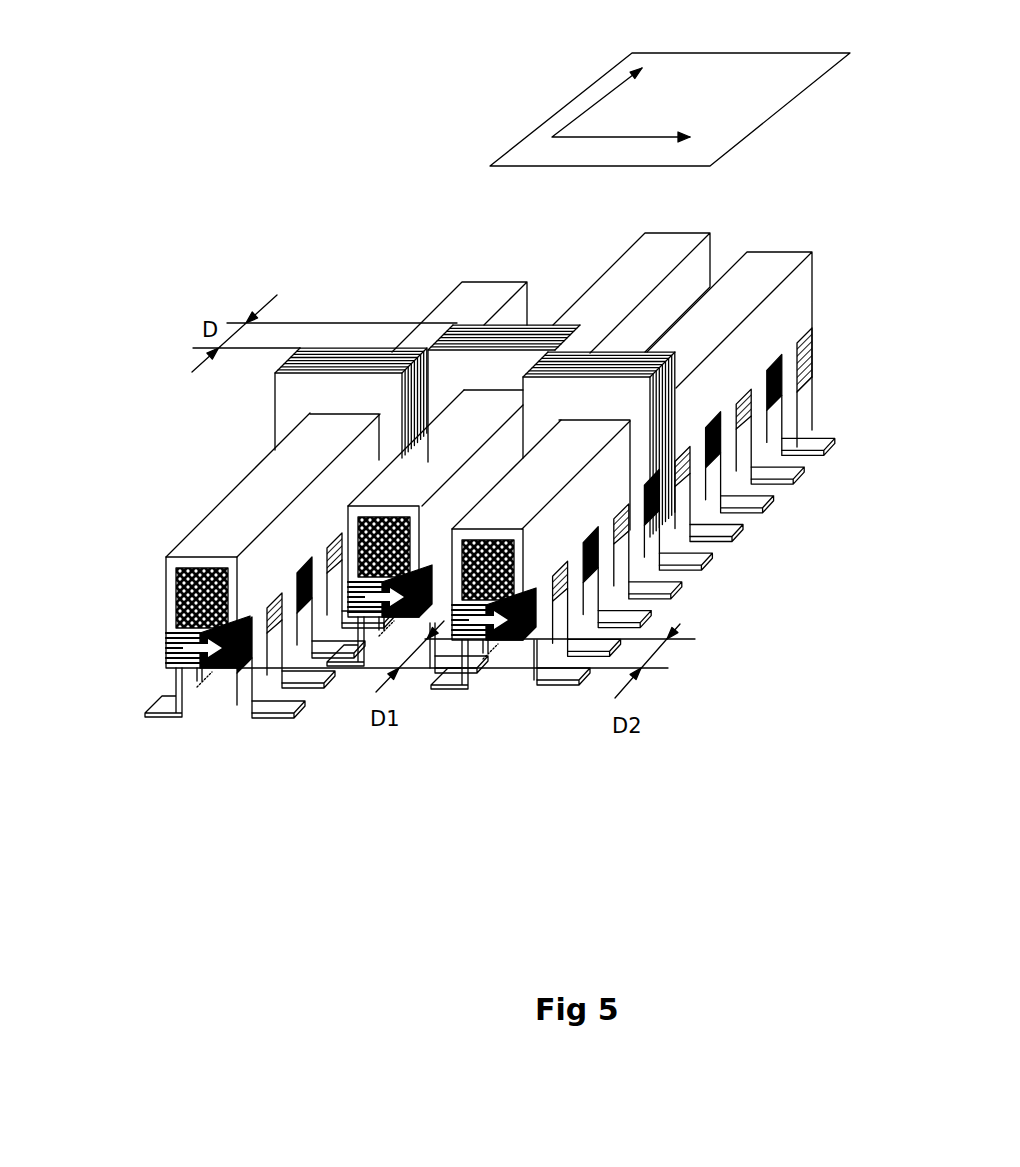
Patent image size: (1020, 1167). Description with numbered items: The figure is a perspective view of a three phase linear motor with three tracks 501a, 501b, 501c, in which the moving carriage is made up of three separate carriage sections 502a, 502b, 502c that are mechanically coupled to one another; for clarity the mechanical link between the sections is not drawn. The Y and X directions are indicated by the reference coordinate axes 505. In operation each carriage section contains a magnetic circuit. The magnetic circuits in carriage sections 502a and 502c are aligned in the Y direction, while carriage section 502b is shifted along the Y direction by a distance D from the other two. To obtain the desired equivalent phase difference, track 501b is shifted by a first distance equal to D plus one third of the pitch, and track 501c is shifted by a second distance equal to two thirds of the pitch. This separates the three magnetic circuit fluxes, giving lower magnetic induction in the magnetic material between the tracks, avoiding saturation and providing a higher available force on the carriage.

The reference coordinate axes 505 is at (592, 82).
The track 501a is at (240, 528).
The track 501b is at (423, 480).
The track 501c is at (570, 503).
The carriage section 502a is at (340, 390).
The carriage section 502b is at (495, 358).
The carriage section 502c is at (603, 395).